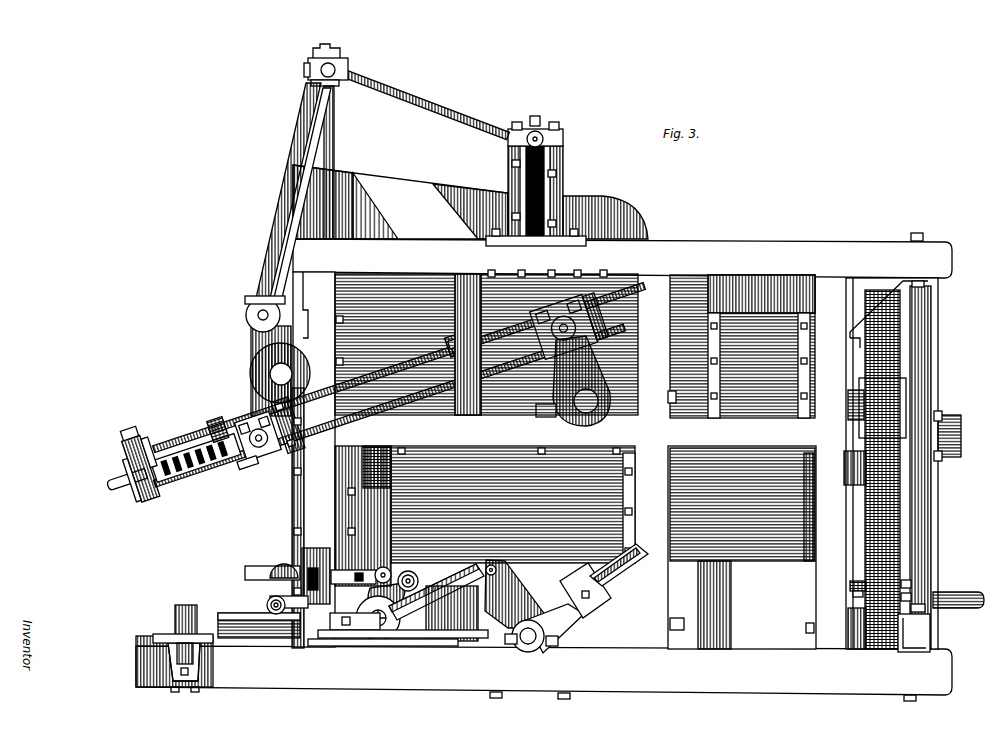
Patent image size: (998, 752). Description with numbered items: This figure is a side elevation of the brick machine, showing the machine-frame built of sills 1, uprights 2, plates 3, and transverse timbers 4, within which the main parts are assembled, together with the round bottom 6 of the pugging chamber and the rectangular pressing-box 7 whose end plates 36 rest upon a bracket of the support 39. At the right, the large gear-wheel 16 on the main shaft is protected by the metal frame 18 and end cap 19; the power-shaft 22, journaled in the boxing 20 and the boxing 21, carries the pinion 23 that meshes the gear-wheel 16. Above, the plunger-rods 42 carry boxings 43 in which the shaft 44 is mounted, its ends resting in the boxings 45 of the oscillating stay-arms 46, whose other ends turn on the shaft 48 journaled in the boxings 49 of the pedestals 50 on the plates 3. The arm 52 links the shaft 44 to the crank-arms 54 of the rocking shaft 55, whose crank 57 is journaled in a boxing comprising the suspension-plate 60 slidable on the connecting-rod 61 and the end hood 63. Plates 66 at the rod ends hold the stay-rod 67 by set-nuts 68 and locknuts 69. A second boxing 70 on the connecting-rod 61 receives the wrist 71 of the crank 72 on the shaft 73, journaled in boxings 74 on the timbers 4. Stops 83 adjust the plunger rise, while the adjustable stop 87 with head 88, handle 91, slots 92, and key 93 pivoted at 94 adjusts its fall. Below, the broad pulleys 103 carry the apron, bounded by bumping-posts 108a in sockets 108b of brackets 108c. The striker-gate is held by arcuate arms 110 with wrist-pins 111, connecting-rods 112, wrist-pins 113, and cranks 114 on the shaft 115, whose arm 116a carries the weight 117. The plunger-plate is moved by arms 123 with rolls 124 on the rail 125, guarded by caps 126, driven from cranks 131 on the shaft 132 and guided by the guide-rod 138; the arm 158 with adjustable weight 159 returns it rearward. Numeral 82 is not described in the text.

The sills 1 is at (544, 673).
The uprights 2 is at (615, 460).
The plates 3 is at (622, 255).
The transverse timbers 4 is at (838, 462).
The round bottom 6 is at (752, 553).
The pressing-box 7 is at (330, 517).
The gear-wheel 16 is at (895, 540).
The metal frame 18 is at (924, 369).
The end cap 19 is at (950, 433).
The boxing 20 is at (905, 580).
The boxing 21 is at (842, 580).
The power-shaft 22 is at (950, 590).
The pinion 23 is at (914, 633).
The end plates 36 is at (283, 506).
The support 39 is at (452, 628).
The plunger-rods 42 is at (327, 145).
The boxings 43 is at (326, 45).
The shaft 44 is at (341, 60).
The boxings 45 is at (300, 66).
The oscillating stay-arms 46 is at (420, 101).
The shaft 48 is at (531, 117).
The boxings 49 is at (548, 127).
The pedestals 50 is at (556, 172).
The arm 52 is at (296, 135).
The crank-arms 54 is at (246, 337).
The rocking shaft 55 is at (262, 365).
The crank 57 is at (244, 381).
The suspension-plate 60 is at (208, 412).
The connecting-rod 61 is at (393, 350).
The end hood 63 is at (264, 452).
The plates 66 is at (159, 485).
The stay-rod 67 is at (200, 473).
The threaded set-nuts 68 is at (147, 500).
The locknuts 69 is at (201, 480).
The boxing 70 is at (542, 307).
The wrist 71 is at (598, 300).
The crank 72 is at (620, 356).
The shaft 73 is at (570, 404).
The boxings 74 is at (534, 408).
The plate 82 is at (229, 605).
The stops 83 is at (379, 405).
The adjustable stop 87 is at (252, 480).
The head 88 is at (220, 406).
The handle 91 is at (123, 475).
The slots 92 is at (397, 426).
The key 93 is at (119, 420).
The pivot 94 is at (143, 437).
The broad pulleys 103 is at (158, 625).
The bumping-posts 108a is at (180, 597).
The sockets 108b is at (188, 649).
The brackets 108c is at (192, 664).
The arcuate arms 110 is at (274, 560).
The wrist-pins 111 is at (259, 597).
The connecting-rods 112 is at (353, 584).
The wrist-pins 113 is at (400, 564).
The cranks 114 is at (412, 630).
The shaft 115 is at (370, 632).
The arm 116a is at (262, 566).
The weight 117 is at (305, 588).
The arm 123 is at (436, 592).
The rolls 124 is at (360, 628).
The rail 125 is at (432, 640).
The cap 126 is at (335, 616).
The cranks 131 is at (512, 580).
The shaft 132 is at (520, 640).
The guide-rod 138 is at (670, 610).
The arm 158 is at (626, 560).
The adjustable weight 159 is at (585, 590).